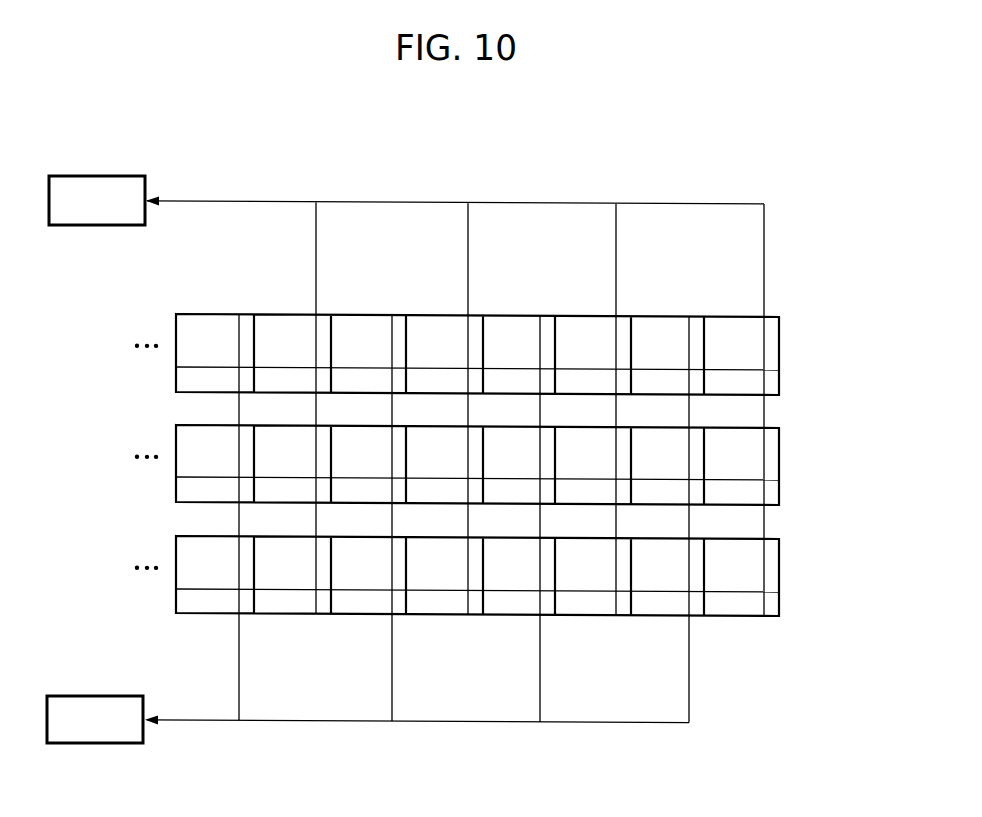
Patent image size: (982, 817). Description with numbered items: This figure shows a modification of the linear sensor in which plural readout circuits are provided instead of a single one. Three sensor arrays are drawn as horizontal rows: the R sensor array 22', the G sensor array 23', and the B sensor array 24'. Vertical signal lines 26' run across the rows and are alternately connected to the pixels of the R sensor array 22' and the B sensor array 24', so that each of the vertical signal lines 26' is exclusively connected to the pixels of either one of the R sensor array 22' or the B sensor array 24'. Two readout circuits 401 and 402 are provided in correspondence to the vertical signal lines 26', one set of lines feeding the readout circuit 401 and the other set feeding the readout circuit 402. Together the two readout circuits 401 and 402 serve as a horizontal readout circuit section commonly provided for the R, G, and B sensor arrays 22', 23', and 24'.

The vertical signal lines 26' is at (488, 461).
The R sensor array 22' is at (508, 354).
The G sensor array 23' is at (508, 465).
The B sensor array 24' is at (508, 576).
The readout circuit 401 is at (86, 175).
The readout circuit 402 is at (86, 695).